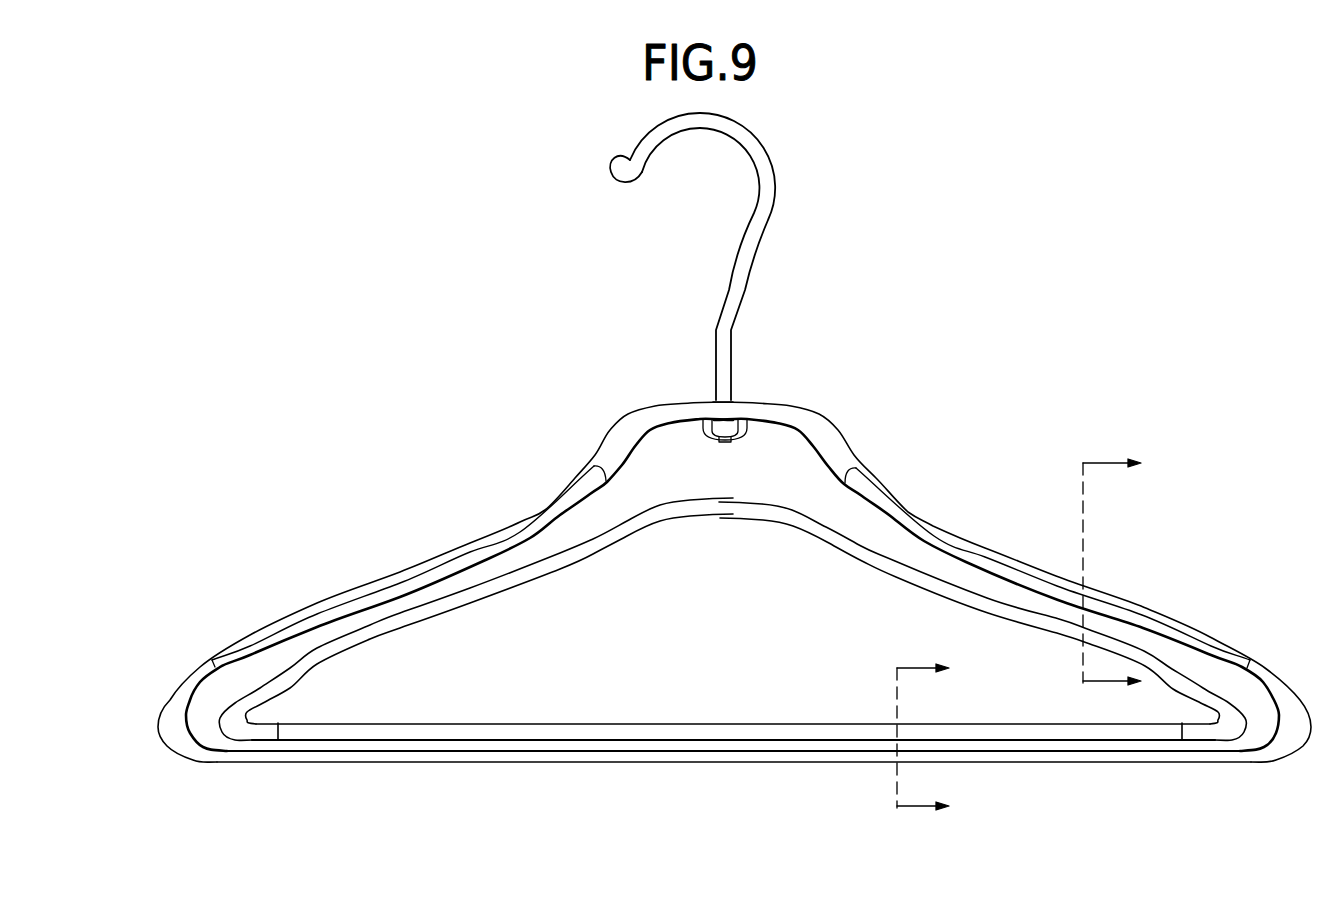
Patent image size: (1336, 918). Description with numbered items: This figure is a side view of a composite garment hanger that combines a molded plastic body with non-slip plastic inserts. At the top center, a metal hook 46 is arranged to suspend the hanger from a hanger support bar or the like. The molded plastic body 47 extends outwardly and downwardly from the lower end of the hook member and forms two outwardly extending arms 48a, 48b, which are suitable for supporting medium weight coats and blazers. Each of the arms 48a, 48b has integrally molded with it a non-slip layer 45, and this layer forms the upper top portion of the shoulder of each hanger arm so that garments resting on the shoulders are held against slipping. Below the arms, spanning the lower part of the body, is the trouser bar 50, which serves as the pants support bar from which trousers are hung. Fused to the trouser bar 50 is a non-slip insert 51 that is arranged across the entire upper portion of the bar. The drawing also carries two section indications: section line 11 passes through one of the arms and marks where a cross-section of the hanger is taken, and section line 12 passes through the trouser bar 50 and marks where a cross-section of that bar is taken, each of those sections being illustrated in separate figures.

The non-slip layer 45 is at (484, 542).
The metal hook 46 is at (771, 208).
The molded plastic body 47 is at (730, 471).
The arm 48a is at (486, 625).
The arm 48b is at (1064, 640).
The trouser bar 50 is at (724, 752).
The non-slip insert 51 is at (628, 722).
The section line 11- 11 is at (1132, 579).
The section line 12- 12 is at (941, 739).